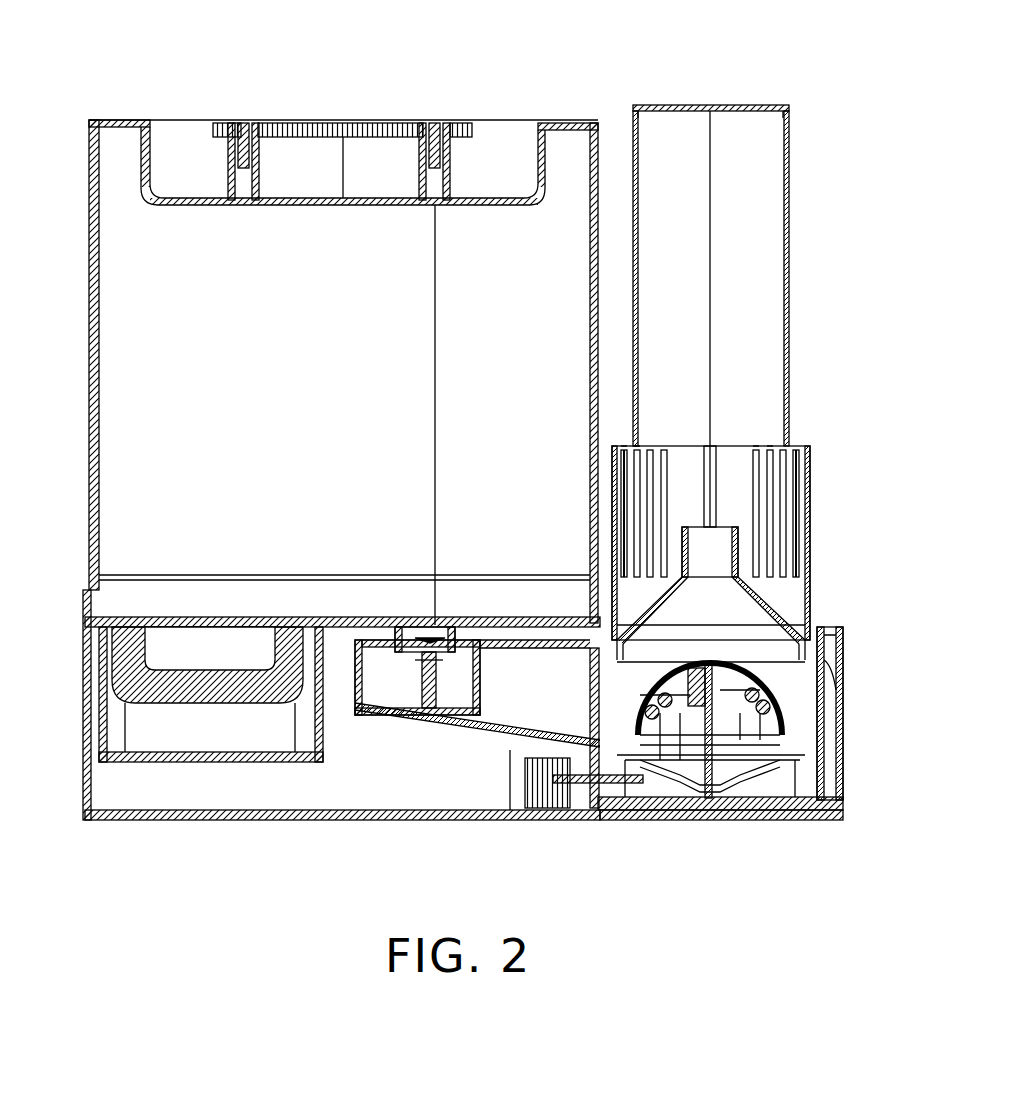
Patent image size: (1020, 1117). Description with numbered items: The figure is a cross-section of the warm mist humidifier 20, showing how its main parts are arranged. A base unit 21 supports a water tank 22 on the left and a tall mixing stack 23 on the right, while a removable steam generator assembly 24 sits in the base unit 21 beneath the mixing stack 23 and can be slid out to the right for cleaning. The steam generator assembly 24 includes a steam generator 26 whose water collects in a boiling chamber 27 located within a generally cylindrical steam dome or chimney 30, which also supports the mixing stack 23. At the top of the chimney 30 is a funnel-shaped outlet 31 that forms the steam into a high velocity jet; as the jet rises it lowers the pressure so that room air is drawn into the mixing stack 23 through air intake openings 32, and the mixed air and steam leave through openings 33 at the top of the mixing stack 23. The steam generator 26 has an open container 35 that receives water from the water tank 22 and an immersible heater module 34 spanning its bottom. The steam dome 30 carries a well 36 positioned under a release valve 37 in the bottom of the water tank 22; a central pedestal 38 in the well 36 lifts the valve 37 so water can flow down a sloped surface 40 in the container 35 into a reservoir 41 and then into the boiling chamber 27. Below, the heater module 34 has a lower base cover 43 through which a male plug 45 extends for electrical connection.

The warm mist humidifier 20 is at (814, 216).
The base unit 21 is at (84, 765).
The water tank 22 is at (582, 123).
The mixing stack 23 is at (792, 382).
The removable steam generator assembly 24 is at (845, 683).
The steam generator 26 is at (535, 745).
The boiling chamber 27 is at (800, 735).
The steam dome 30 is at (770, 605).
The outlet 31 is at (712, 540).
The air intake openings 32 is at (778, 505).
The openings 33 is at (738, 105).
The immersible heater module 34 is at (790, 690).
The open container 35 is at (400, 712).
The well 36 is at (340, 728).
The release valve 37 is at (425, 625).
The central pedestal 38 is at (485, 640).
The sloped surface 40 is at (480, 722).
The reservoir 41 is at (612, 800).
The lower base cover 43 is at (815, 822).
The male plug 45 is at (548, 812).